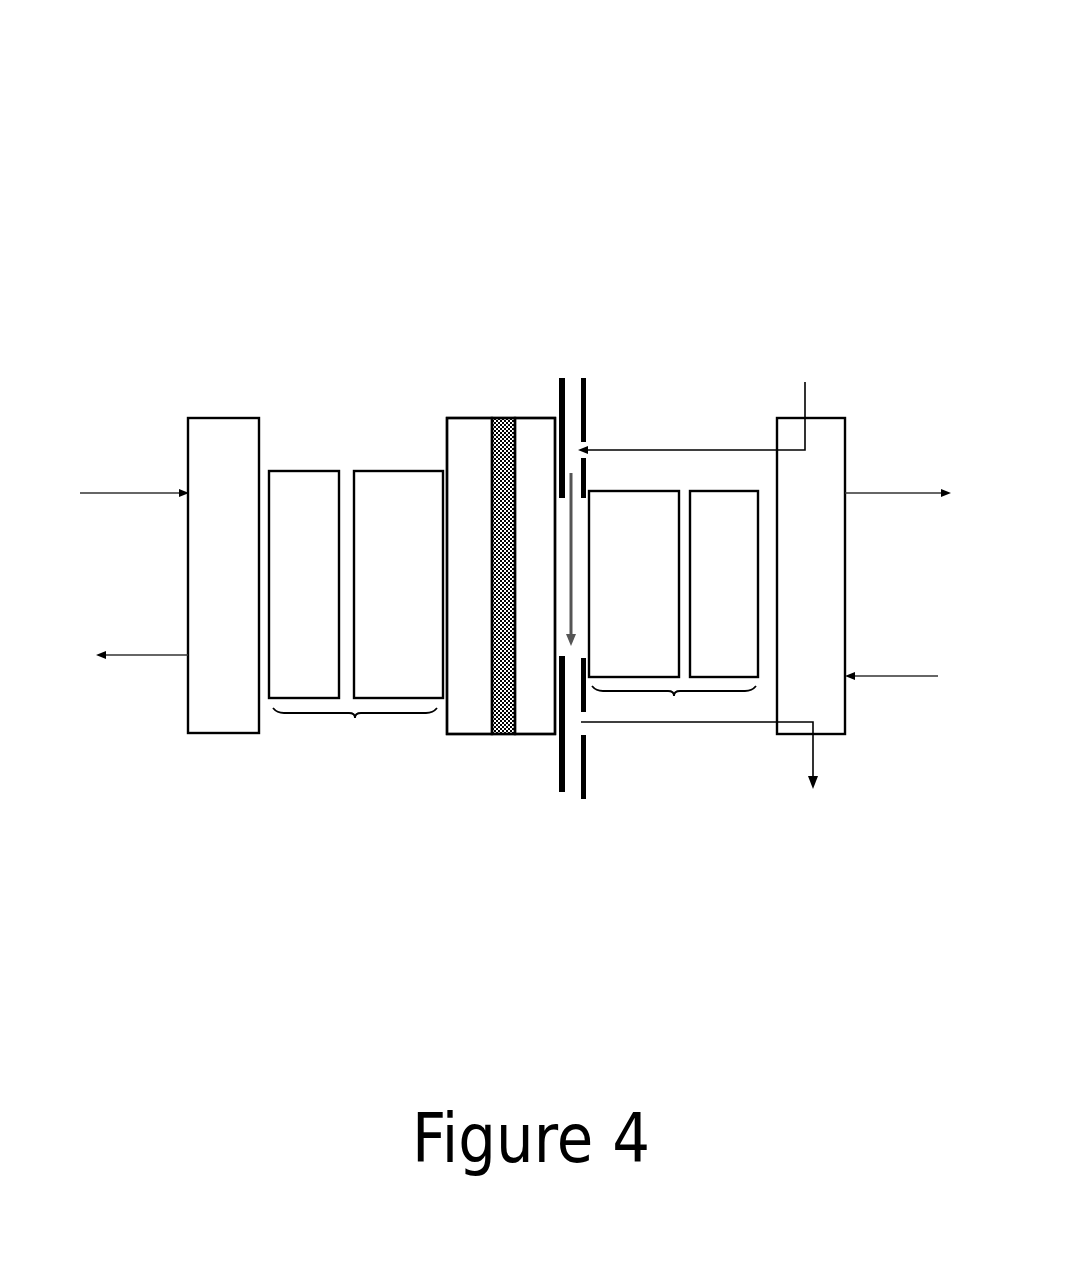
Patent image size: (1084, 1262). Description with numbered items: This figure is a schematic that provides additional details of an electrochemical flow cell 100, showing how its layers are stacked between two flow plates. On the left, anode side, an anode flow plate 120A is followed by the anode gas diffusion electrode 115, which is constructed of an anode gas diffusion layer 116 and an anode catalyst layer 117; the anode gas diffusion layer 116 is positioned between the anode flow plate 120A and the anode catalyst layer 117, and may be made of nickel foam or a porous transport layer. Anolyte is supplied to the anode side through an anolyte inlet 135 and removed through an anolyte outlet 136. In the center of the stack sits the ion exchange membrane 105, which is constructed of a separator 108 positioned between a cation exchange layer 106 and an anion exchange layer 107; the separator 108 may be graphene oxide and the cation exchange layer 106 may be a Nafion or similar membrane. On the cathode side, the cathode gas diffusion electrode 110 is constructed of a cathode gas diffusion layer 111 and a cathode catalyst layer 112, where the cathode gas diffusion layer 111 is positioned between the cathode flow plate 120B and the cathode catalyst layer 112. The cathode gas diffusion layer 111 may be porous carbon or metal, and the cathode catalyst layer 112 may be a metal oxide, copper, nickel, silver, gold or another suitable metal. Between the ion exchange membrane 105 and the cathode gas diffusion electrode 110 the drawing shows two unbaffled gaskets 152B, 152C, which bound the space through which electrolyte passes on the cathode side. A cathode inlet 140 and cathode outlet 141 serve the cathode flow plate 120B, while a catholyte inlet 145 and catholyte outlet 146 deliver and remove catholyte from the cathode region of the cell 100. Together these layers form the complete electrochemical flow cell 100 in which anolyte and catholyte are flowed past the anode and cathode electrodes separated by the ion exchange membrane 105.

The electrochemical flow cell 100 is at (447, 120).
The ion exchange membrane 105 is at (482, 648).
The cation exchange layer 106 is at (536, 709).
The anion exchange layer 107 is at (467, 710).
The separator 108 is at (498, 418).
The cathode gas diffusion electrode 110 is at (673, 559).
The cathode gas diffusion layer 111 is at (723, 501).
The cathode catalyst layer 112 is at (623, 506).
The anode gas diffusion electrode 115 is at (347, 549).
The anode gas diffusion layer 116 is at (307, 490).
The anode catalyst layer 117 is at (392, 490).
The anode flow plate 120A is at (228, 713).
The cathode flow plate 120B is at (835, 722).
The anolyte inlet 135 is at (134, 473).
The anolyte outlet 136 is at (142, 675).
The cathode inlet 140 is at (898, 473).
The cathode outlet 141 is at (891, 657).
The catholyte inlet 145 is at (705, 375).
The catholyte outlet 146 is at (706, 780).
The unbaffled gasket 152B is at (560, 380).
The unbaffled gasket 152C is at (587, 408).